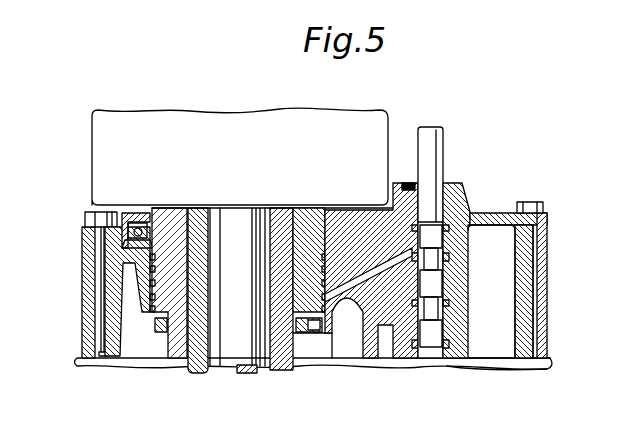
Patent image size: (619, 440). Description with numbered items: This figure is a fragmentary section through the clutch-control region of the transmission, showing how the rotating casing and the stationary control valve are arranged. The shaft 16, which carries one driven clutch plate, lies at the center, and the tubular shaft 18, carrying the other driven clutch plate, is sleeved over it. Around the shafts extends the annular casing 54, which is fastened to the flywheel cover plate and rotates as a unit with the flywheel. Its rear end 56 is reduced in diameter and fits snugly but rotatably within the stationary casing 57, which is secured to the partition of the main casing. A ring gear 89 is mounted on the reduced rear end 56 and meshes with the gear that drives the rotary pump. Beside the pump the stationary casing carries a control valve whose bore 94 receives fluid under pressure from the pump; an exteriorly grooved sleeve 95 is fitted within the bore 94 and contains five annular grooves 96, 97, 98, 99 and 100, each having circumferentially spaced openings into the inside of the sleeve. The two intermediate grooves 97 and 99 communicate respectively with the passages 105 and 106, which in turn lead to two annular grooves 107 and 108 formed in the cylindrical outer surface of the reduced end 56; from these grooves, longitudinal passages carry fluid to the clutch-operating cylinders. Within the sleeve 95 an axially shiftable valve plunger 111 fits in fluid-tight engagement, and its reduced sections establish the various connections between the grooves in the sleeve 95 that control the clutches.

The annular casing 54 is at (92, 152).
The stationary casing 57 is at (82, 288).
The rear end of the casing 56 is at (177, 273).
The ring gear 89 is at (167, 333).
The shaft 18 is at (313, 384).
The shaft 16 is at (237, 368).
The annular groove 107 is at (333, 332).
The passage 106 is at (360, 318).
The bore 94 is at (447, 360).
The annular groove 108 is at (326, 245).
The passage 105 is at (365, 215).
The valve plunger 111 is at (443, 143).
The sleeve 95 is at (453, 200).
The annular groove 96 is at (468, 237).
The annular groove 97 is at (448, 255).
The annular groove 98 is at (448, 275).
The annular groove 99 is at (448, 298).
The annular groove 100 is at (448, 321).